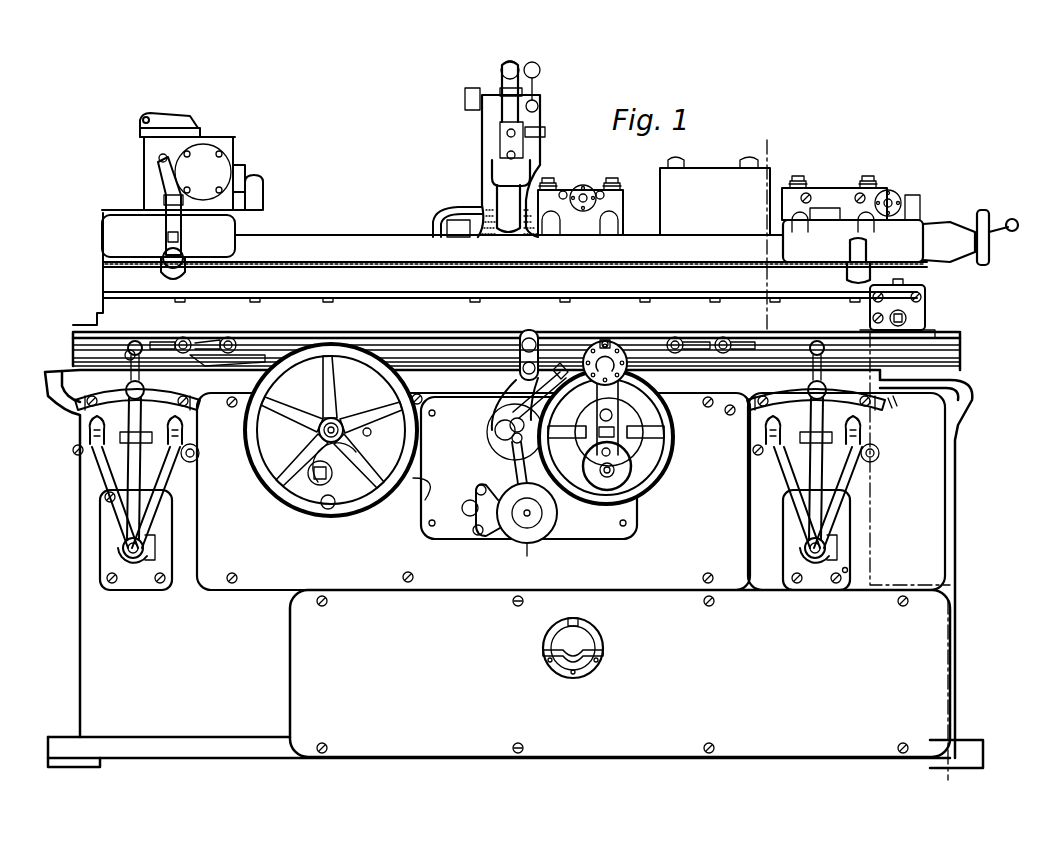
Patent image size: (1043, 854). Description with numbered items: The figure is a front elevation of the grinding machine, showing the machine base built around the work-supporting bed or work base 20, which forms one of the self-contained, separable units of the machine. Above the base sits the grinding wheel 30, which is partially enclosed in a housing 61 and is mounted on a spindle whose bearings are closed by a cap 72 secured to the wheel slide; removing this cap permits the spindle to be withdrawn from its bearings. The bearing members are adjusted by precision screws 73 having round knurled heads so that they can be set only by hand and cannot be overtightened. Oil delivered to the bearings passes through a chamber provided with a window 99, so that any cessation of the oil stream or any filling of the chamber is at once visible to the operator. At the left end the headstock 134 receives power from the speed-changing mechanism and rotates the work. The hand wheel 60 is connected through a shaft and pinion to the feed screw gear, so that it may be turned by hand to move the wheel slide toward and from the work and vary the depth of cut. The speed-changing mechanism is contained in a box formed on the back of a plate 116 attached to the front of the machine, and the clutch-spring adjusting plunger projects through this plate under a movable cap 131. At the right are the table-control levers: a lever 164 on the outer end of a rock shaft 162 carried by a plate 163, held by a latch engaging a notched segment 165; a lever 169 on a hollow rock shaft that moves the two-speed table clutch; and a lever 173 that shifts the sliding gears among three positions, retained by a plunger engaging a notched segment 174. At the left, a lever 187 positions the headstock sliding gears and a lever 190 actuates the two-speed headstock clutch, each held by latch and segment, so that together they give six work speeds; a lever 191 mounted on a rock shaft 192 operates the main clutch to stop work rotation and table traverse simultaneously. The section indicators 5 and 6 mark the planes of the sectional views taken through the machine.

The work base 20 is at (945, 496).
The grinding wheel 30 is at (488, 206).
The hand wheel 60 is at (655, 472).
The housing 61 is at (484, 130).
The cap 72 is at (825, 195).
The screws 73 is at (798, 175).
The window 99 is at (586, 198).
The plate 116 is at (922, 680).
The movable cap 131 is at (595, 643).
The headstock 134 is at (232, 205).
The rock shaft 162 is at (830, 545).
The plate 163 is at (848, 570).
The lever 164 is at (850, 480).
The notched segment 165 is at (880, 445).
The lever 169 is at (800, 505).
The lever 173 is at (900, 365).
The notched segment 174 is at (885, 352).
The lever 187 is at (90, 410).
The lever 190 is at (112, 472).
The lever 191 is at (165, 478).
The rock shaft 192 is at (126, 551).
The section line 5 is at (790, 137).
The section line 6 is at (965, 785).